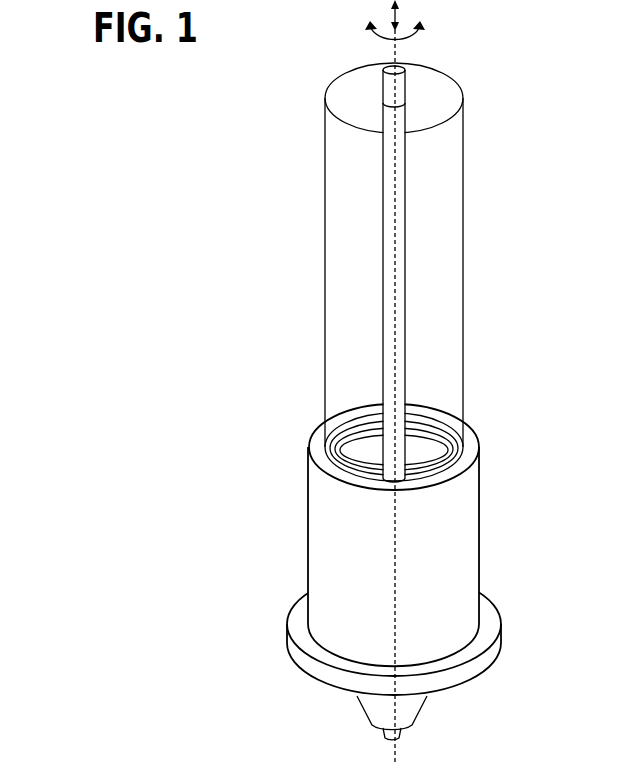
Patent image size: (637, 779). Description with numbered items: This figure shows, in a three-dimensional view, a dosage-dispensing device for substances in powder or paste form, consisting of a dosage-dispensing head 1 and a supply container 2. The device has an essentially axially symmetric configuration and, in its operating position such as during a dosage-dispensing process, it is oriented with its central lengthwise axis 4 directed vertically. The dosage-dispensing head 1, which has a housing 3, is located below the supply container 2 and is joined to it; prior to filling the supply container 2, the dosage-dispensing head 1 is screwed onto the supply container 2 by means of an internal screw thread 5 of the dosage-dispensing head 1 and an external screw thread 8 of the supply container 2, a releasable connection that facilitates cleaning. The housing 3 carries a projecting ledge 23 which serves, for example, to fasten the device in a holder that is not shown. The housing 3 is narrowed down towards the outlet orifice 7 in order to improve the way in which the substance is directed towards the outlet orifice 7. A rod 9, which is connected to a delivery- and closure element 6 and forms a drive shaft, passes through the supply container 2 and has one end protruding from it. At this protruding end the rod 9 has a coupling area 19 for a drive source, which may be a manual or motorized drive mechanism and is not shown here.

The dosage-dispensing head 1 is at (503, 578).
The supply container 2 is at (434, 257).
The housing 3 is at (331, 616).
The central lengthwise axis 4 is at (398, 52).
The internal screw thread 5 is at (428, 415).
The delivery- and closure element 6 is at (404, 735).
The outlet orifice 7 is at (383, 730).
The external screw thread 8 is at (440, 437).
The rod 9 is at (388, 304).
The coupling area 19 is at (388, 88).
The projecting ledge 23 is at (487, 655).